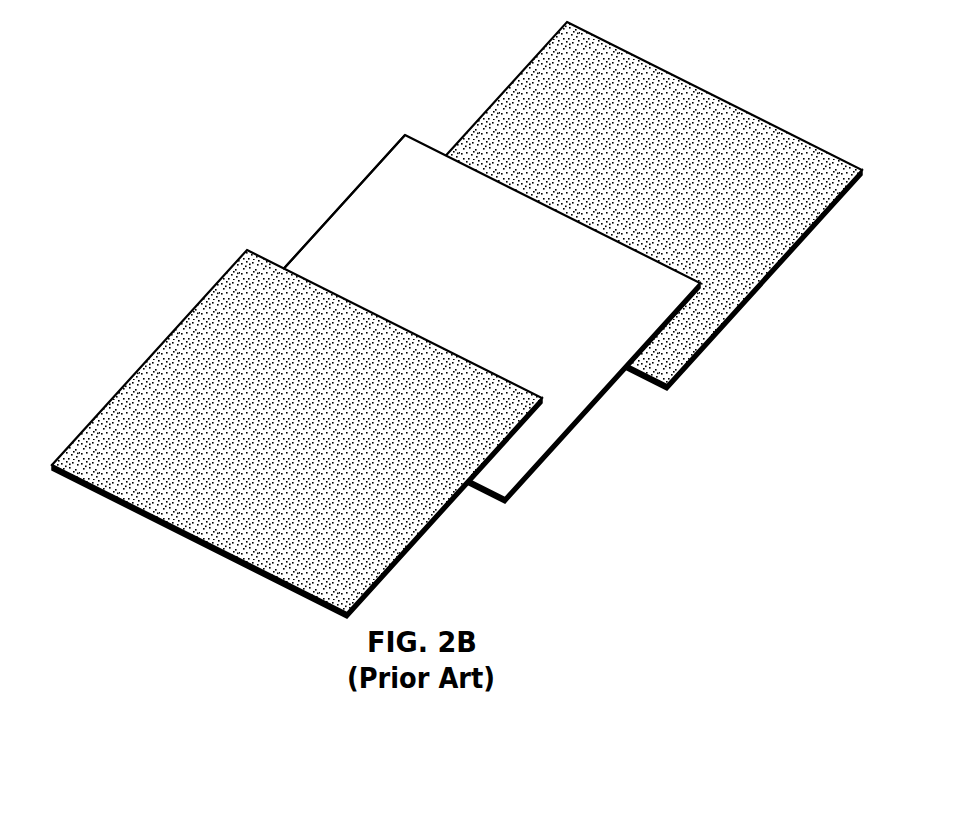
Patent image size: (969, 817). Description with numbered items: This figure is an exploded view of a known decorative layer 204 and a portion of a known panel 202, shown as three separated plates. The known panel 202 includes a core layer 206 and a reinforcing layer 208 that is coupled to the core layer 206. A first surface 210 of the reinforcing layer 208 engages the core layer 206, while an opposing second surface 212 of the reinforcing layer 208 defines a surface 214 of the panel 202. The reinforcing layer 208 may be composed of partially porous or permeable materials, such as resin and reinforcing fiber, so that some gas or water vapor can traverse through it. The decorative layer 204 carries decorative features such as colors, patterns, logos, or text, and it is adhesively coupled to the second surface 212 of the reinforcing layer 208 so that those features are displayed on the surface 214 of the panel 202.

The known panel 202 is at (384, 107).
The known decorative layer 204 is at (113, 415).
The core layer 206 is at (617, 243).
The reinforcing layer 208 is at (455, 319).
The first surface 210 is at (625, 372).
The second surface 212 is at (570, 398).
The surface 214 is at (302, 255).